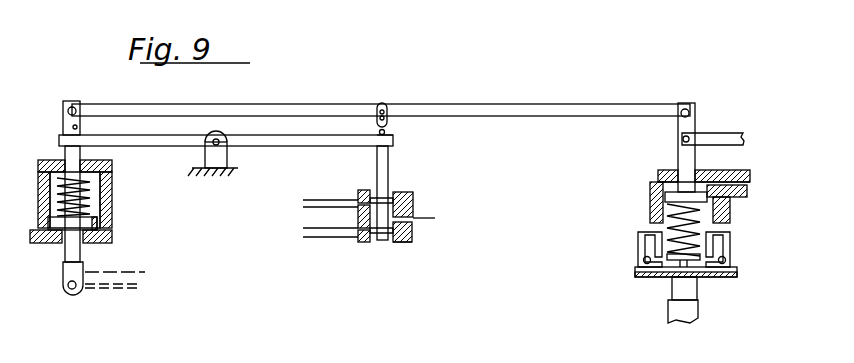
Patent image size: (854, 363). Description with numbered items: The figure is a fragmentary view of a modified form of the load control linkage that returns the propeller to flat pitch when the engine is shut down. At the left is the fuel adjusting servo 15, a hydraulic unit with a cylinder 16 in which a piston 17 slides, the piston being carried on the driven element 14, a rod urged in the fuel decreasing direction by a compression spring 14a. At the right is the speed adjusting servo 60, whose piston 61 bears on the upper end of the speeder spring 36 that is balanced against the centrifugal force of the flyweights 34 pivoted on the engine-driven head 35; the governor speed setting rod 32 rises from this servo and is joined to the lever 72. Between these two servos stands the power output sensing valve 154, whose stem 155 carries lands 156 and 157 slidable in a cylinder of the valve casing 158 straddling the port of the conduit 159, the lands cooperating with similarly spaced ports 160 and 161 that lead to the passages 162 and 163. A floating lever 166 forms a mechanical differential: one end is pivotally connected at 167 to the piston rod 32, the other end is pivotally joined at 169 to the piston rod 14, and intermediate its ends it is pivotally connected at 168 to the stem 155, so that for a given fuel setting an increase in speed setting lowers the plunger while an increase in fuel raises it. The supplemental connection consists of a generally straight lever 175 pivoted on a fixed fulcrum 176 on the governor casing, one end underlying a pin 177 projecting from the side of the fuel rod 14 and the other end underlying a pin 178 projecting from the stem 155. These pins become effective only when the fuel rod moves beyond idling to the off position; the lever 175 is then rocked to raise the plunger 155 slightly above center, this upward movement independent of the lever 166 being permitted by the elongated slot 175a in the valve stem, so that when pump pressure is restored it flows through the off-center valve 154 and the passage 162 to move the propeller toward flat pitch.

The driven element 14 is at (65, 154).
The compression spring 14a is at (100, 178).
The reversible power servo 15 is at (40, 201).
The cylinder 16 is at (99, 200).
The piston 17 is at (98, 223).
The governor speed setting rod 32 is at (696, 126).
The flyweights 34 is at (638, 240).
The head 35 is at (638, 278).
The speeder spring 36 is at (700, 209).
The servo 60 is at (653, 171).
The piston 61 is at (654, 194).
The lever 72 is at (730, 142).
The valve 154 is at (402, 181).
The stem 155 is at (389, 160).
The land 156 is at (409, 200).
The land 157 is at (410, 234).
The valve casing 158 is at (393, 248).
The conduit 159 is at (435, 220).
The port 160 is at (364, 196).
The port 161 is at (364, 242).
The passage 162 is at (318, 198).
The passage 163 is at (316, 240).
The floating lever 166 is at (520, 104).
The pivot 167 is at (688, 108).
The pivot 168 is at (386, 104).
The pivot 169 is at (78, 106).
The lever 175 is at (267, 136).
The elongated slot 175a is at (380, 136).
The fixed fulcrum 176 is at (213, 147).
The pin 177 is at (63, 125).
The pin 178 is at (385, 132).